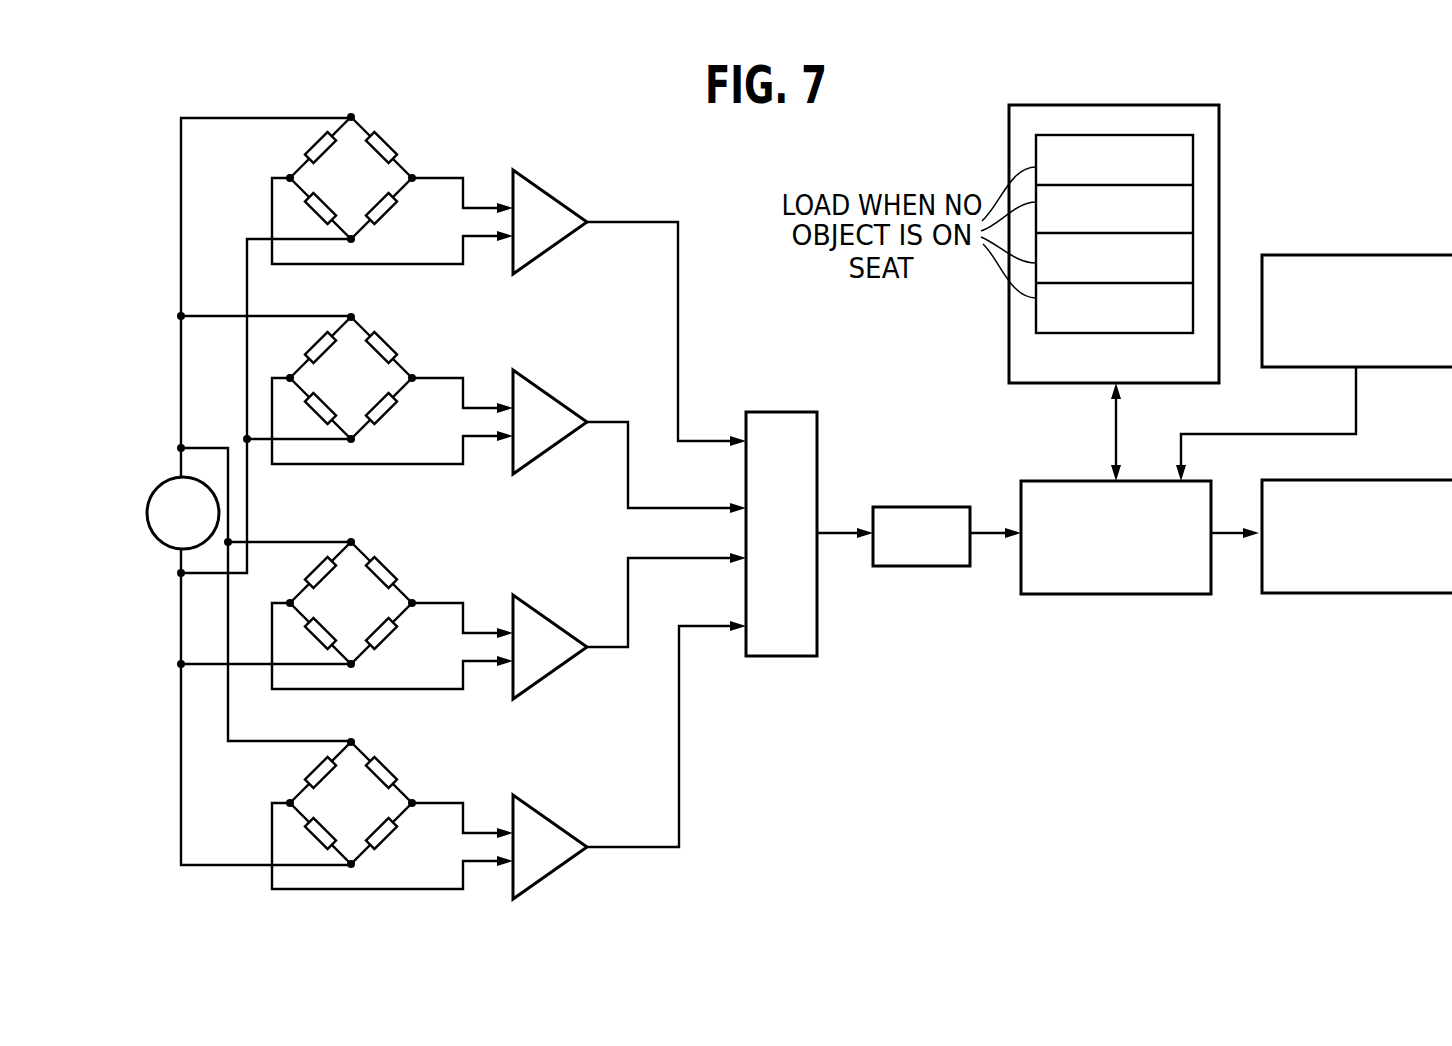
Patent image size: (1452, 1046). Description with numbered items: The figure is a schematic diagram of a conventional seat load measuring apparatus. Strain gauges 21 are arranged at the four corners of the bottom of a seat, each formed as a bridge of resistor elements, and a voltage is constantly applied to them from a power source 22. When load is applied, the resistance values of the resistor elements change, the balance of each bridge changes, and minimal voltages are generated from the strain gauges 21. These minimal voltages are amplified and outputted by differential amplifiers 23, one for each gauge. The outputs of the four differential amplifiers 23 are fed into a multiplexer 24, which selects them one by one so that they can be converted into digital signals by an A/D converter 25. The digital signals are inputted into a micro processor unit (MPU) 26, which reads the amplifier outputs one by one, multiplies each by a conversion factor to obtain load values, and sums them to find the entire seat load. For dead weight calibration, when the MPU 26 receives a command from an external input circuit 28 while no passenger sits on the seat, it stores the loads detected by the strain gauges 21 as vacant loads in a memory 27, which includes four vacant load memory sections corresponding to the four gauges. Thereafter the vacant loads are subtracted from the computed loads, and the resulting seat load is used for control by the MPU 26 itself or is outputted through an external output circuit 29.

The strain gauge 21 is at (364, 126).
The power source 22 is at (155, 492).
The differential amplifier 23 is at (538, 183).
The multiplexer 24 is at (786, 412).
The A/D converter 25 is at (897, 507).
The micro processor unit (MPU) 26 is at (1054, 594).
The memory 27 is at (1172, 105).
The external input circuit 28 is at (1349, 255).
The external output circuit 29 is at (1323, 593).